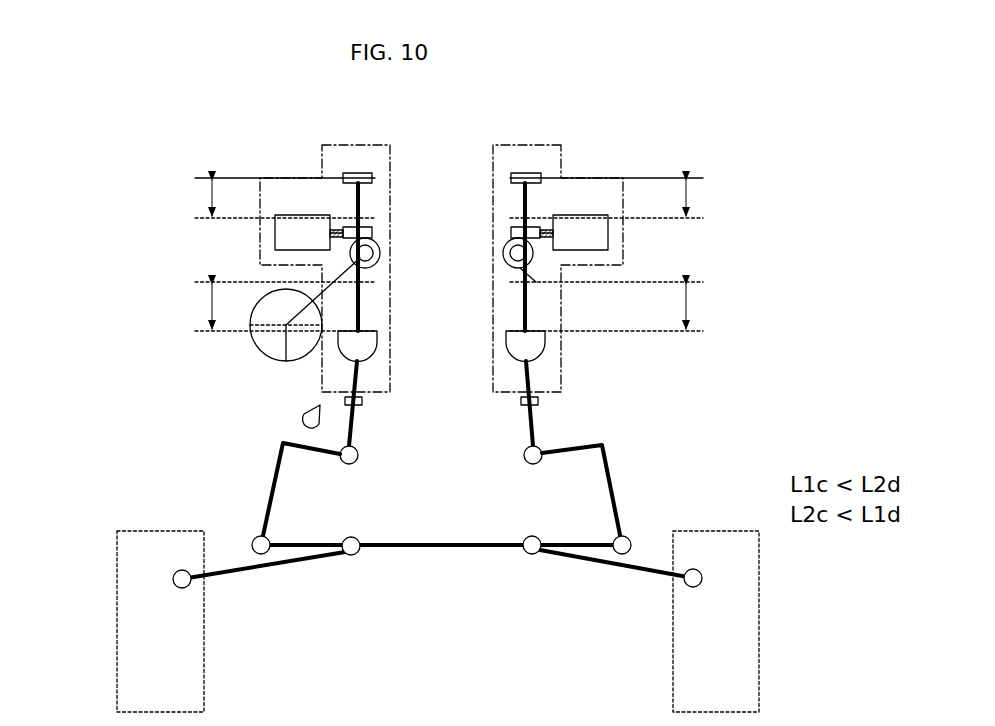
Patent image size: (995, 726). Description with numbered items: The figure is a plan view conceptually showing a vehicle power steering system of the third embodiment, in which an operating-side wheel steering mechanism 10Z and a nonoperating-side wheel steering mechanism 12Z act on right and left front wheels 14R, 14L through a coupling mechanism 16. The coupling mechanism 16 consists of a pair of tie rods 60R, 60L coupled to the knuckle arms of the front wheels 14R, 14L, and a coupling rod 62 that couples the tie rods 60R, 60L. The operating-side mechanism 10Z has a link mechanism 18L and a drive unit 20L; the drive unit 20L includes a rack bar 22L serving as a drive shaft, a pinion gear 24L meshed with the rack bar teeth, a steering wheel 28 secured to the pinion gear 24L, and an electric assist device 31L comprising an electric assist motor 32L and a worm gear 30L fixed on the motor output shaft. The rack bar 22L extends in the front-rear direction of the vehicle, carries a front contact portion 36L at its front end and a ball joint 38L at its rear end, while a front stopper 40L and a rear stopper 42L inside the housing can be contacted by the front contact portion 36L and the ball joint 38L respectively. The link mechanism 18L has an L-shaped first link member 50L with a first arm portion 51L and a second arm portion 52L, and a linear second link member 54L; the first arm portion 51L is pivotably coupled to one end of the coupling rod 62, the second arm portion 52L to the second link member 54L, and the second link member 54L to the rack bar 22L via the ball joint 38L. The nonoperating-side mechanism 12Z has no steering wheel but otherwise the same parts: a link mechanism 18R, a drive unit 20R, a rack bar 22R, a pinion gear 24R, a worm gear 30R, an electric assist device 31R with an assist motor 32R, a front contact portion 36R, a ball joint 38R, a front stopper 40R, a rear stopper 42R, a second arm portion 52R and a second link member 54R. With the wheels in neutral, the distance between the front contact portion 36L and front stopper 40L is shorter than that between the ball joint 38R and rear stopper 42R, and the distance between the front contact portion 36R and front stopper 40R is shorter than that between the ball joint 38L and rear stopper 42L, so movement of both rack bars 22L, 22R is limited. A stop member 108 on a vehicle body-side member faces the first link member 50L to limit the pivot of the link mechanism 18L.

The operating-side wheel steering mechanism 10Z is at (138, 307).
The nonoperating-side wheel steering mechanism 12Z is at (772, 347).
The left front wheel 14L is at (138, 637).
The right front wheel 14R is at (765, 625).
The coupling mechanism 16 is at (505, 595).
The link mechanism 18L is at (188, 423).
The link mechanism 18R is at (682, 442).
The drive unit 20L is at (320, 133).
The drive unit 20R is at (692, 150).
The rack bar 22L is at (393, 195).
The rack bar 22R is at (528, 300).
The pinion gear 24L is at (380, 253).
The pinion gear 24R is at (504, 258).
The steering wheel 28 is at (250, 345).
The worm gear 30L is at (374, 233).
The worm gear 30R is at (510, 232).
The electric assist device 31L is at (333, 214).
The electric assist device 31R is at (545, 215).
The electric assist motor 32L is at (285, 228).
The electric assist motor 32R is at (598, 235).
The front contact portion 36L is at (355, 172).
The front contact portion 36R is at (527, 172).
The ball joint 38L is at (365, 345).
The ball joint 38R is at (535, 343).
The front stopper 40L is at (346, 222).
The front stopper 40R is at (512, 220).
The rear stopper 42L is at (372, 287).
The rear stopper 42R is at (537, 282).
The first link member 50L is at (622, 482).
The first arm portion 51L is at (267, 495).
The second arm portion 52L is at (320, 447).
The second arm portion 52R is at (533, 455).
The second link member 54L is at (357, 378).
The second link member 54R is at (535, 425).
The tie rod 60L is at (272, 565).
The tie rod 60R is at (612, 565).
The coupling rod 62 is at (442, 548).
The stop member 108 is at (302, 418).